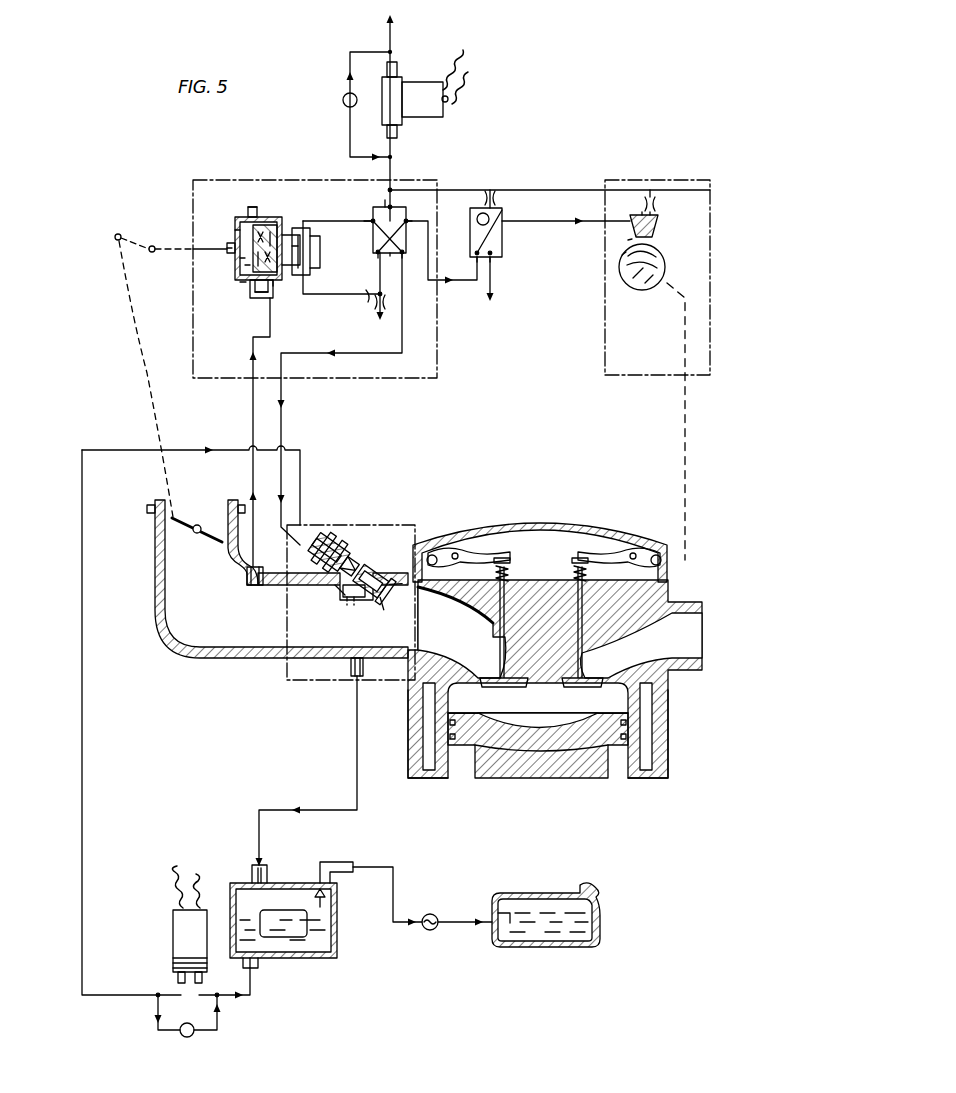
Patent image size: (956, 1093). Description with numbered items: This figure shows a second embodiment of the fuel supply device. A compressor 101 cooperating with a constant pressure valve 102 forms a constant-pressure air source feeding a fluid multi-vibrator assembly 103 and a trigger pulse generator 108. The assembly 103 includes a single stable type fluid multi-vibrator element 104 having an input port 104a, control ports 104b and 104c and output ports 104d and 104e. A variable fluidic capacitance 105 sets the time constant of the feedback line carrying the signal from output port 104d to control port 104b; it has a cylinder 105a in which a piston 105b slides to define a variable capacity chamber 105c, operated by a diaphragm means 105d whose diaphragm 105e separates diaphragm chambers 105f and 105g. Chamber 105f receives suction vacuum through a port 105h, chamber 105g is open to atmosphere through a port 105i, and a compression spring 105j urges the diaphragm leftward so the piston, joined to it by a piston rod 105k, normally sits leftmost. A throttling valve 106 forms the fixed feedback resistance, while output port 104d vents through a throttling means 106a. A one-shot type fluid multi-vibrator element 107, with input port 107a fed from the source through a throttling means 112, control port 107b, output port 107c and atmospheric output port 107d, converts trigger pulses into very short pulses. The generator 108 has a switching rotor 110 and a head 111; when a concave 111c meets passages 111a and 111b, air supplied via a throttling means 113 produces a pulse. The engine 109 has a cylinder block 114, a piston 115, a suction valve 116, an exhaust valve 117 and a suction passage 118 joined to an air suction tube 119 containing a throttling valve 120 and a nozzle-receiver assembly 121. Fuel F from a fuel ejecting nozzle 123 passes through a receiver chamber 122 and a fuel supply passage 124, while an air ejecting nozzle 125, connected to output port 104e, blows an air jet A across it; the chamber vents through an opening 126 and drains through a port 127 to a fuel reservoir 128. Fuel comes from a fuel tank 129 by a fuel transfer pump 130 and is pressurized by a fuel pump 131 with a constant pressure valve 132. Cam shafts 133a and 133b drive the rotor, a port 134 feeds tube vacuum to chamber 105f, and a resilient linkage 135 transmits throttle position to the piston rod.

The compressor 101 is at (437, 80).
The constant pressure valve 102 is at (343, 95).
The fluid multi-vibrator assembly 103 is at (294, 180).
The single stable type fluid multi-vibrator element 104 is at (398, 207).
The input port 104a is at (385, 207).
The control port 104b is at (372, 220).
The control port 104c is at (410, 212).
The output port 104d is at (372, 250).
The output port 104e is at (402, 243).
The variable fluidic capacitance 105 is at (243, 216).
The cylinder 105a is at (344, 305).
The piston 105b is at (263, 225).
The variable capacity chamber 105c is at (302, 247).
The diaphragm means 105d is at (240, 282).
The diaphragm 105e is at (248, 267).
The diaphragm chamber 105f is at (246, 206).
The diaphragm chamber 105g is at (240, 260).
The port 105h is at (262, 295).
The port 105i is at (232, 250).
The compression spring 105j is at (272, 282).
The piston rod 105k is at (237, 231).
The throttling valve 106 is at (340, 399).
The throttling means 106a is at (393, 358).
The one-shot type fluid multi-vibrator element 107 is at (495, 208).
The input port 107a is at (480, 205).
The control port 107b is at (566, 215).
The output port 107c is at (476, 264).
The output port 107d is at (487, 256).
The trigger pulse generator 108 is at (603, 183).
The engine 109 is at (520, 523).
The switching rotor 110 is at (668, 265).
The head 111 is at (658, 223).
The passage 111a is at (645, 212).
The passage 111b is at (628, 240).
The concave 111c is at (622, 253).
The throttling means 112 is at (493, 190).
The throttling means 113 is at (660, 198).
The cylinder block 114 is at (660, 698).
The piston 115 is at (620, 765).
The suction valve 116 is at (508, 599).
The exhaust valve 117 is at (592, 575).
The suction passage 118 is at (413, 680).
The air suction tube 119 is at (178, 643).
The throttling valve 120 is at (180, 527).
The nozzle-receiver assembly 121 is at (337, 532).
The receiver chamber 122 is at (376, 538).
The fuel ejecting nozzle 123 is at (358, 523).
The fuel supply passage 124 is at (415, 549).
The air ejecting nozzle 125 is at (340, 585).
The opening 126 is at (399, 534).
The port 127 is at (355, 597).
The fuel reservoir 128 is at (293, 960).
The fuel tank 129 is at (518, 947).
The fuel transfer pump 130 is at (432, 930).
The fuel pump 131 is at (173, 927).
The constant pressure valve 132 is at (180, 1030).
The cam shaft 133a is at (430, 553).
The cam shaft 133b is at (663, 570).
The port 134 is at (270, 582).
The resilient linkage 135 is at (147, 373).
The air A is at (400, 553).
The fuel F is at (590, 923).